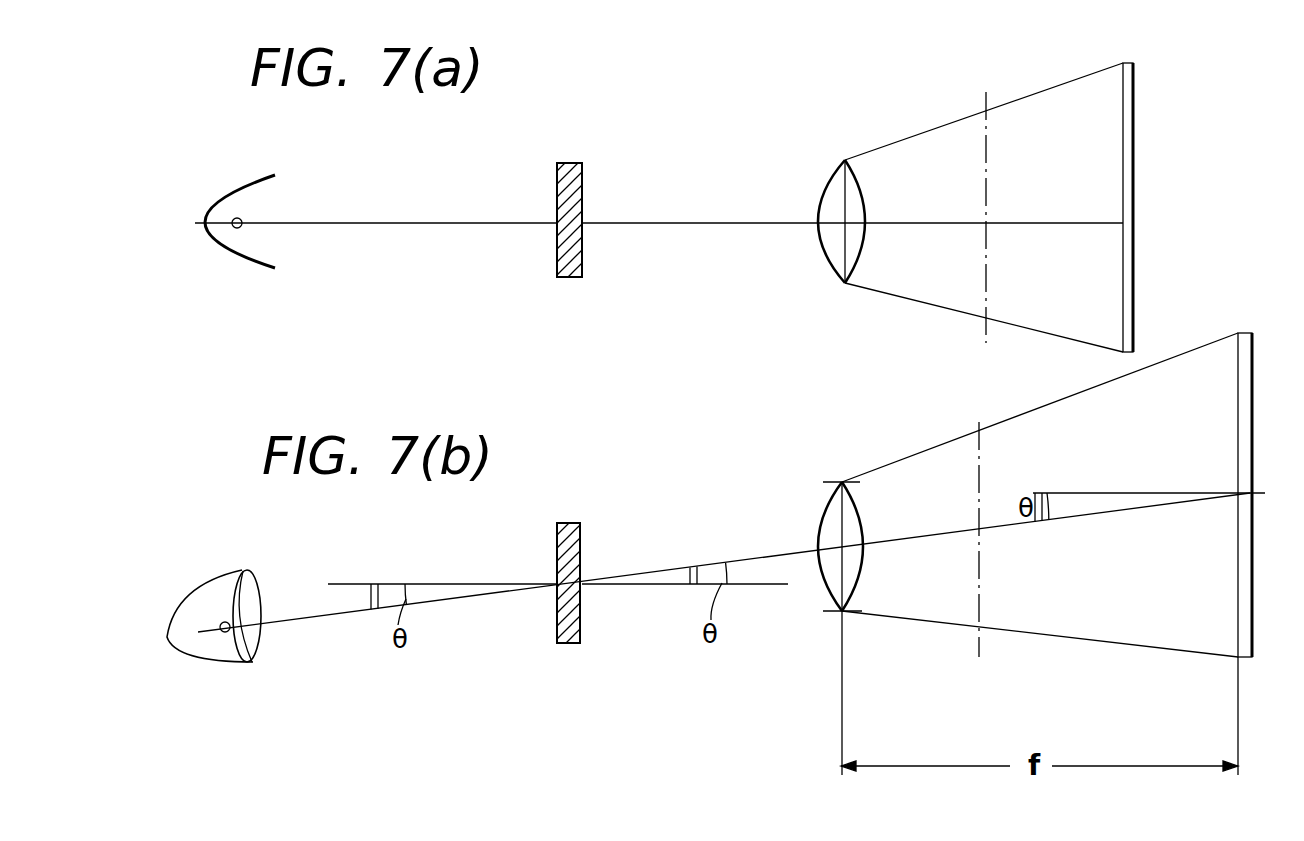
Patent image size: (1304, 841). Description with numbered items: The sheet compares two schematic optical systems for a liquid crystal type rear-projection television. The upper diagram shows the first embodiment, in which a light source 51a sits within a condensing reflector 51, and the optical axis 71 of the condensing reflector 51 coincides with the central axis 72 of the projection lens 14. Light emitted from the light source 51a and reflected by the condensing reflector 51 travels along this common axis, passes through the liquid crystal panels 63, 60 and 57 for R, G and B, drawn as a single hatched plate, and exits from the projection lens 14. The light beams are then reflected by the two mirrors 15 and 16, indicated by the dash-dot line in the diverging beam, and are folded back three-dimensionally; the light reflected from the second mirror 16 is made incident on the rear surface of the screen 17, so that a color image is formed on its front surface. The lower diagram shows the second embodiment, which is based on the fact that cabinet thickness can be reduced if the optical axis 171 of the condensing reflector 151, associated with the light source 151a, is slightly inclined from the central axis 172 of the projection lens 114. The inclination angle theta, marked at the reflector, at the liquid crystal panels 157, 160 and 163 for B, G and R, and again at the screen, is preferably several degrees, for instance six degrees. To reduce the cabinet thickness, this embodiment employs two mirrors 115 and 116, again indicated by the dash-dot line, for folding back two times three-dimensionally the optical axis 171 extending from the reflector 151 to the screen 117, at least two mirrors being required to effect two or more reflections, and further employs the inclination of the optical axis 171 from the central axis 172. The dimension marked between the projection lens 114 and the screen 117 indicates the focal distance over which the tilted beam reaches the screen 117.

The condensing reflector 51 is at (262, 268).
The light source 51a is at (240, 230).
The optical axis 71 is at (473, 222).
The central axis 72 is at (774, 222).
The liquid crystal panel 57 is at (650, 194).
The liquid crystal panel 60 is at (650, 194).
The liquid crystal panel 63 is at (572, 160).
The projection lens 14 is at (833, 248).
The mirror 15 is at (977, 201).
The mirror 16 is at (985, 147).
The screen 17 is at (1134, 118).
The condensing reflector 151 is at (191, 663).
The light source 151a is at (228, 634).
The optical axis 171 is at (452, 598).
The central axis 172 is at (761, 589).
The liquid crystal panel 157 is at (672, 567).
The liquid crystal panel 160 is at (672, 567).
The liquid crystal panel 163 is at (572, 526).
The projection lens 114 is at (822, 584).
The mirror 115 is at (982, 560).
The mirror 116 is at (978, 640).
The screen 117 is at (1237, 392).